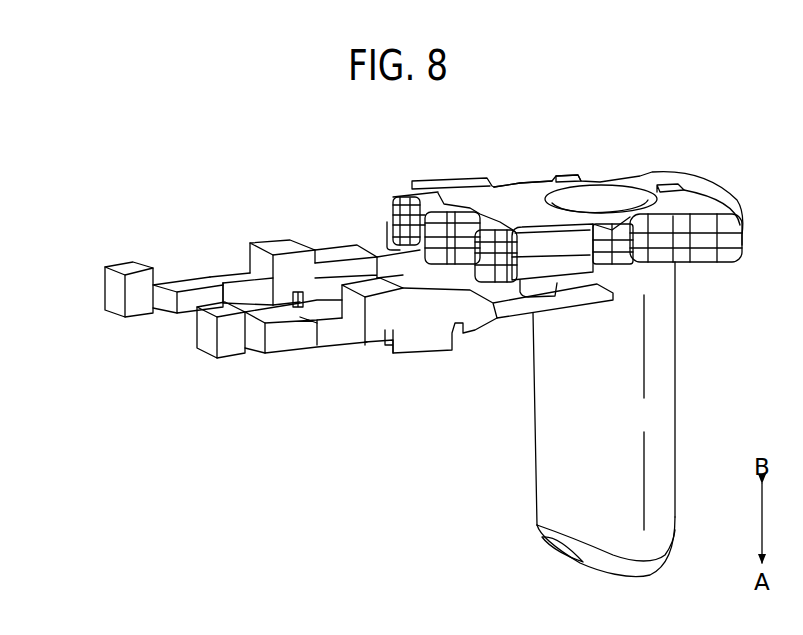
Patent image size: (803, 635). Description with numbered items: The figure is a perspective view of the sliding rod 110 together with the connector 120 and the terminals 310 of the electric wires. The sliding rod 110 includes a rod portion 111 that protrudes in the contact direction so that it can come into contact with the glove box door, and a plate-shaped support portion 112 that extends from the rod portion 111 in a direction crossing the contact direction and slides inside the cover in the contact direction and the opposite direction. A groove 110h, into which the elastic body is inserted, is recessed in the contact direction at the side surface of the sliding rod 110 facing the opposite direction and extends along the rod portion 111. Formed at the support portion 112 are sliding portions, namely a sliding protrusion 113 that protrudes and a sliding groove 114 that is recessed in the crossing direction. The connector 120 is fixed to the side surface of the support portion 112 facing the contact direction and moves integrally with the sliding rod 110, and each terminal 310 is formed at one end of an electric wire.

The sliding rod 110 is at (522, 410).
The groove 110h is at (607, 203).
The rod portion 111 is at (632, 413).
The support portion 112 is at (512, 200).
The sliding protrusion 113 is at (393, 218).
The sliding groove 114 is at (557, 180).
The connector 120 is at (552, 253).
The terminal 310 is at (108, 295).